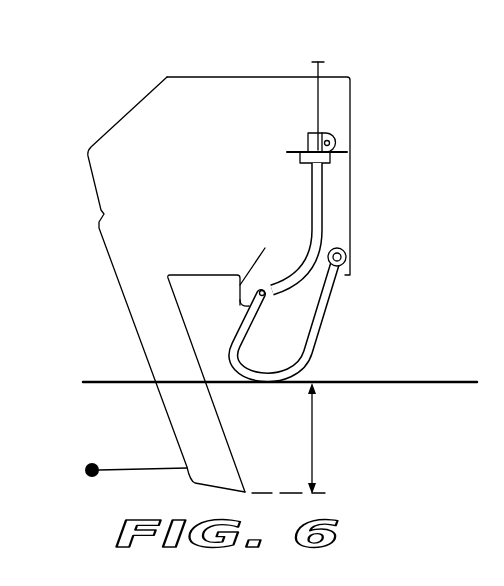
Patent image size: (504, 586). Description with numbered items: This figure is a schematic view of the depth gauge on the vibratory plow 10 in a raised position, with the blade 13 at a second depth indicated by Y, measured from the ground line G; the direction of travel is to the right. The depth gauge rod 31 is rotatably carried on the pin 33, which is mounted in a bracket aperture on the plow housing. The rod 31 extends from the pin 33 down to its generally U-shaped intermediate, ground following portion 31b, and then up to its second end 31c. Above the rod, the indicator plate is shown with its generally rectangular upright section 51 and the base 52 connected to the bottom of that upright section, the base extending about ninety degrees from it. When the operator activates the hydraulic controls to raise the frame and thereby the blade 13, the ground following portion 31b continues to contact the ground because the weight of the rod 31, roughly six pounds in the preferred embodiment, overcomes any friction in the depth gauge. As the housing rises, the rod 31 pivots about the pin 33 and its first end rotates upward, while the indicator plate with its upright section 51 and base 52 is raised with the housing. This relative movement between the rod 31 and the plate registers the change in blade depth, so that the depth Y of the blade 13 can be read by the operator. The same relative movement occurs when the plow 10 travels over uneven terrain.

The vibratory plow 10 is at (124, 75).
The blade 13 is at (181, 420).
The rod 31 is at (322, 327).
The intermediate, ground following portion 31b is at (270, 381).
The second end 31c is at (240, 275).
The pin 33 is at (346, 252).
The upright section 51 is at (320, 62).
The base 52 is at (340, 153).
The ground G is at (417, 382).
The depth Y is at (313, 433).